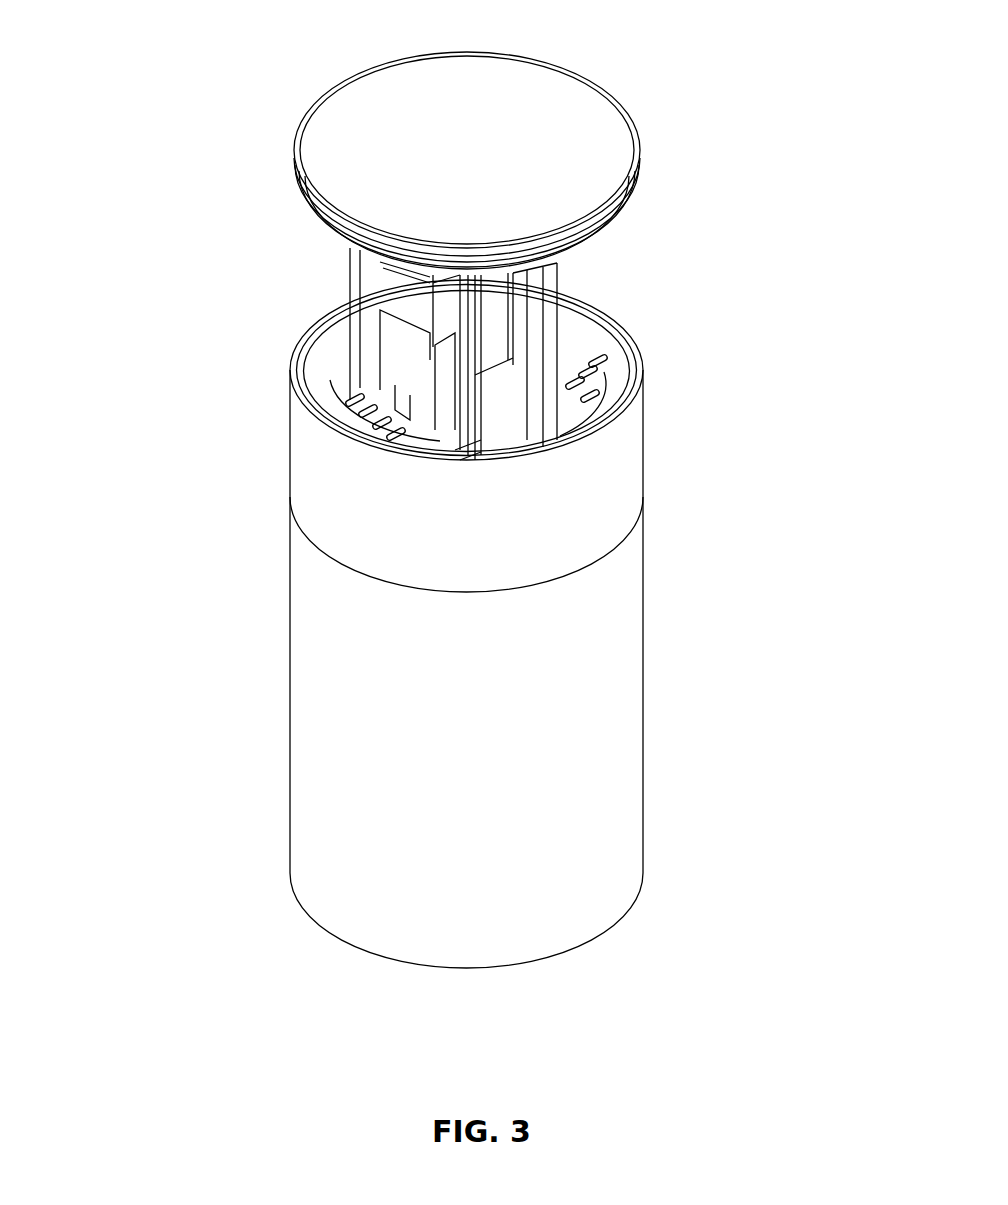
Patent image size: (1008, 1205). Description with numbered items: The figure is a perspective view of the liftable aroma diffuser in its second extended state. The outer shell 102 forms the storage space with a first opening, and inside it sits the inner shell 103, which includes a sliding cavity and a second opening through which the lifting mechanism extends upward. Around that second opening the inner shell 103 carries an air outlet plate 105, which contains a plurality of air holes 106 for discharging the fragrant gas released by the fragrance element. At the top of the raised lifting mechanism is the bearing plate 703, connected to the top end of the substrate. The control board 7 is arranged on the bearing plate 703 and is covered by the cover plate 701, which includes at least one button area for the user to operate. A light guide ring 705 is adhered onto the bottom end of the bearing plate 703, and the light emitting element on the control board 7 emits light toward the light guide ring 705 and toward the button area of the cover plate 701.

The control board 7 is at (590, 180).
The cover plate 701 is at (560, 150).
The light guide ring 705 is at (587, 210).
The bearing plate 703 is at (593, 254).
The inner shell 103 is at (232, 242).
The air outlet plate 105 is at (264, 363).
The air holes 106 is at (670, 361).
The outer shell 102 is at (589, 624).